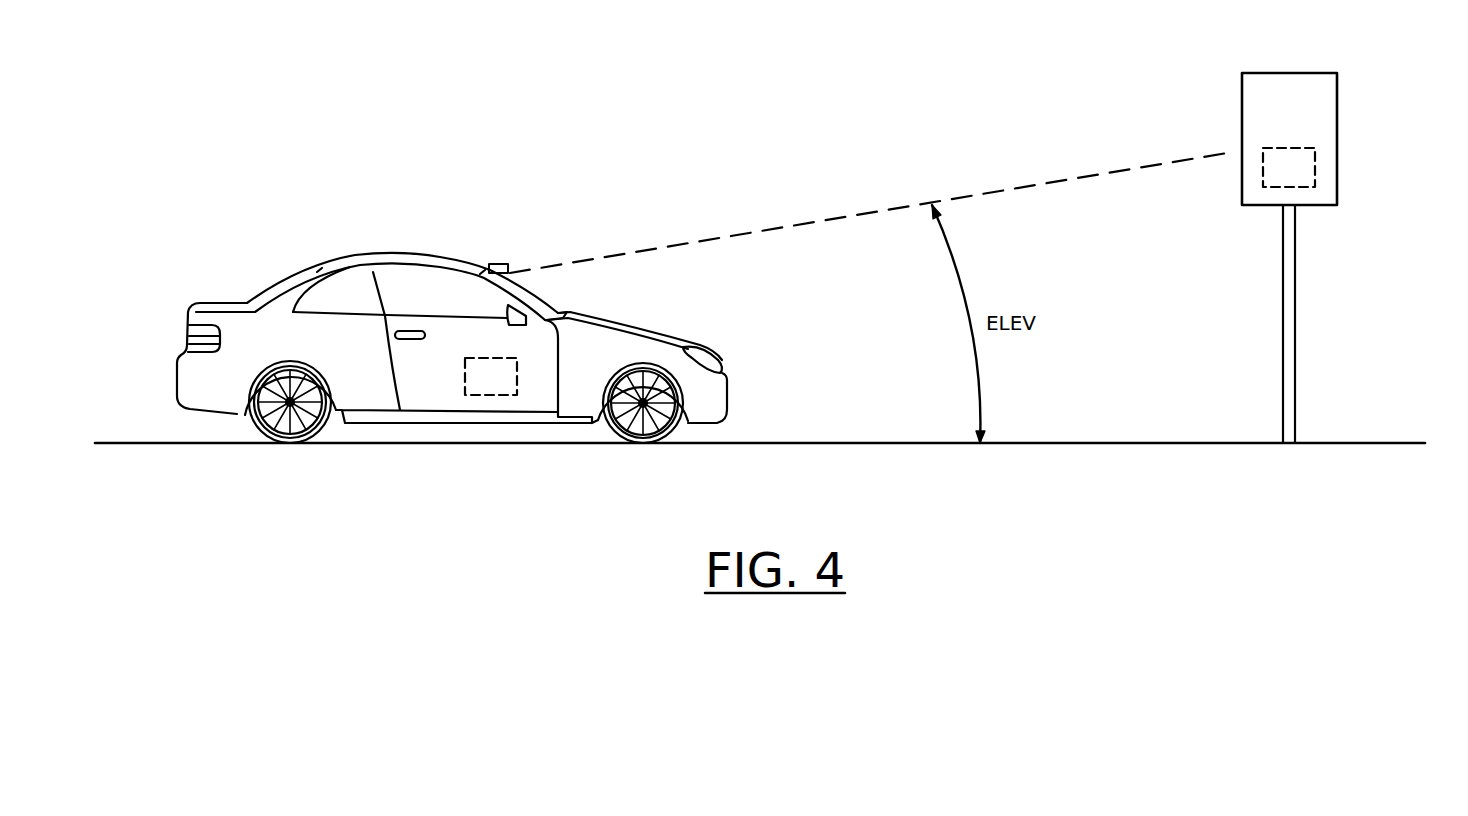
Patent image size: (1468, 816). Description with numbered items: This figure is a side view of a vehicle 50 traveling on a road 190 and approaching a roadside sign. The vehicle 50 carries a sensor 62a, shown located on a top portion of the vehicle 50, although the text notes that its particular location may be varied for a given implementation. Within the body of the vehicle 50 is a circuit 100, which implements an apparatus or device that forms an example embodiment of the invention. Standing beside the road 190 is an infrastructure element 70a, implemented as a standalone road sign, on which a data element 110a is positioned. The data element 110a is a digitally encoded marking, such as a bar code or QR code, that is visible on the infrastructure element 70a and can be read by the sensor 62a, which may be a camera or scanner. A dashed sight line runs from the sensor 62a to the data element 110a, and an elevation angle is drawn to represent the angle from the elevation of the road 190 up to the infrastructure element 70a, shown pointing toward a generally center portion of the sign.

The vehicle 50 is at (358, 255).
The sensor 62a is at (498, 264).
The circuit 100 is at (488, 396).
The infrastructure element 70a is at (1272, 73).
The data element 110a is at (1315, 172).
The road 190 is at (1087, 445).